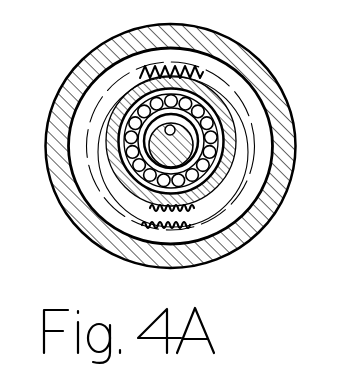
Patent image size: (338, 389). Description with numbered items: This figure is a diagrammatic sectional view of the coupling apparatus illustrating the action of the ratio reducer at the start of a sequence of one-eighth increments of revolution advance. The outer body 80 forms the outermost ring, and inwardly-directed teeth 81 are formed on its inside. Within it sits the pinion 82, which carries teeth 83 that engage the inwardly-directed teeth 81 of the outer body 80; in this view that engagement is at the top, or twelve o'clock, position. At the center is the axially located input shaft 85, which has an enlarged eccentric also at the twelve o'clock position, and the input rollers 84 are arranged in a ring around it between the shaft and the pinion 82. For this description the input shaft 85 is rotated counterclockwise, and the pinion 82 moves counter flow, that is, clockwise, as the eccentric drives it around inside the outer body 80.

The outer body 80 is at (108, 54).
The inwardly-directed teeth 81 is at (188, 226).
The pinion 82 is at (215, 98).
The teeth 83 is at (192, 70).
The input rollers 84 is at (208, 121).
The input shaft 85 is at (150, 156).